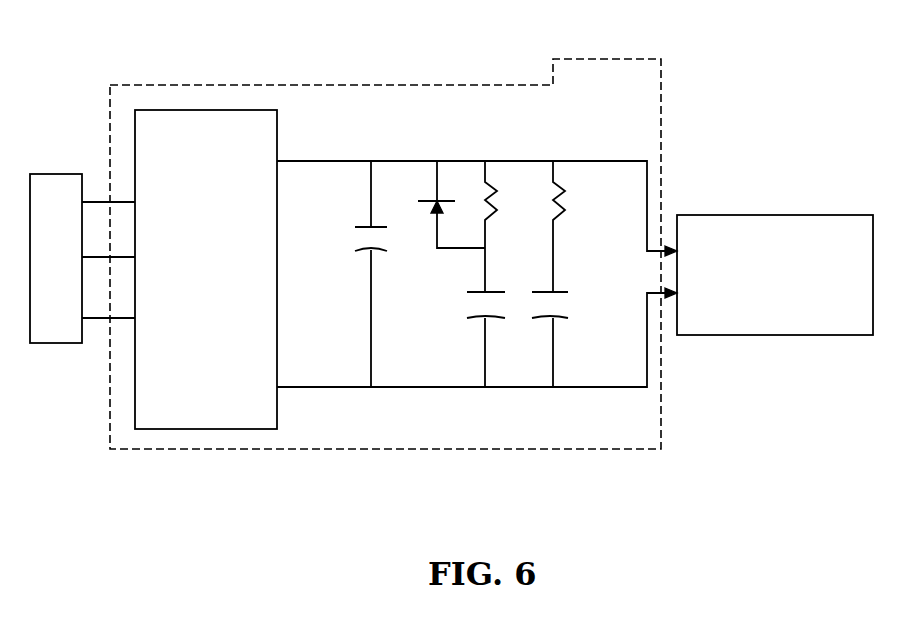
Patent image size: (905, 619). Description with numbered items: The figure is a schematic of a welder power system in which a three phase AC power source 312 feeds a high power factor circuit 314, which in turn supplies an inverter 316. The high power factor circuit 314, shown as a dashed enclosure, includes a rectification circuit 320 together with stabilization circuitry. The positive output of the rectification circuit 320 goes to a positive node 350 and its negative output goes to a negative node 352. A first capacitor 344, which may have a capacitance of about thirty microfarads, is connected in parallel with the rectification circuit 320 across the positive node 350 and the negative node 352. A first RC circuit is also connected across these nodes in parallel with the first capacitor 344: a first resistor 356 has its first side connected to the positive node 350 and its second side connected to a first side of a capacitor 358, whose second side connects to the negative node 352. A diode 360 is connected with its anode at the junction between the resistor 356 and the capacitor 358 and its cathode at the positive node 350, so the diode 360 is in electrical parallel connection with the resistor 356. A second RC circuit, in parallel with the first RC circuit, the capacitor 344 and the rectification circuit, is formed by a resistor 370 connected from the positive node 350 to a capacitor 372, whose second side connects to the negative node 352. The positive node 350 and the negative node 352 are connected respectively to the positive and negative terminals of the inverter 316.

The three phase AC power source 312 is at (66, 174).
The high power factor circuit 314 is at (298, 85).
The inverter 316 is at (778, 215).
The rectification circuit 320 is at (206, 110).
The first capacitor 344 is at (369, 251).
The positive node 350 is at (528, 161).
The negative node 352 is at (549, 387).
The first resistor 356 is at (484, 196).
The capacitor 358 is at (481, 291).
The diode 360 is at (436, 199).
The first resistor 370 is at (557, 195).
The capacitor 372 is at (560, 291).